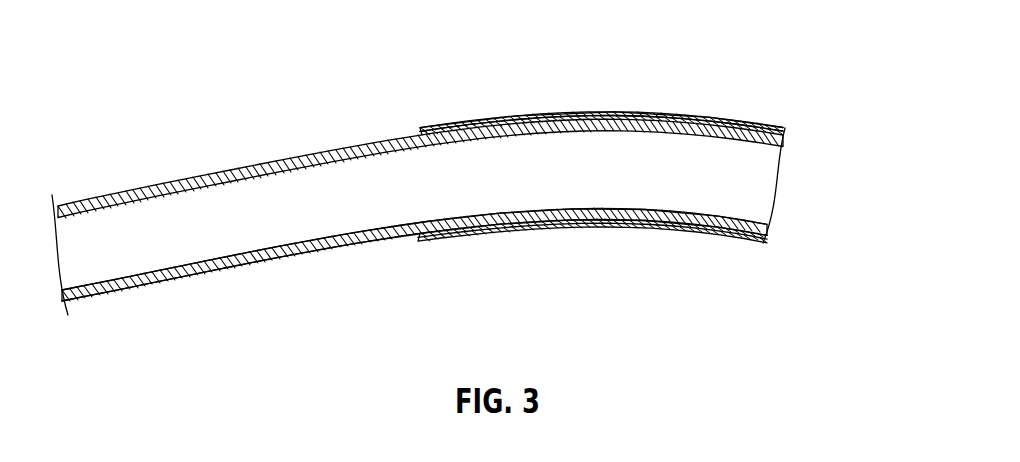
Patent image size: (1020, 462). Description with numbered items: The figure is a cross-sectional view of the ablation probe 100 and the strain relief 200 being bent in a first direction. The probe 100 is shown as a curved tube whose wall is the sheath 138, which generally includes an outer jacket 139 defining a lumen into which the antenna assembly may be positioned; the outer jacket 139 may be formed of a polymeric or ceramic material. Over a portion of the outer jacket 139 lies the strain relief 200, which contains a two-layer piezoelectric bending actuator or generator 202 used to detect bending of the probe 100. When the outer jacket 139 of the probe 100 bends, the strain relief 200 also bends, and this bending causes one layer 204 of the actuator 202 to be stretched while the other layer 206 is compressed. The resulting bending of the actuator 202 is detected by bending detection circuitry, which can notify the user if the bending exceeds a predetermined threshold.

The ablation probe 100 is at (418, 222).
The sheath 138 is at (367, 260).
The outer jacket 139 is at (262, 265).
The strain relief 200 is at (630, 171).
The piezoelectric bending actuator 202 is at (760, 115).
The layer of the actuator 204 is at (602, 115).
The other layer of the actuator 206 is at (693, 122).